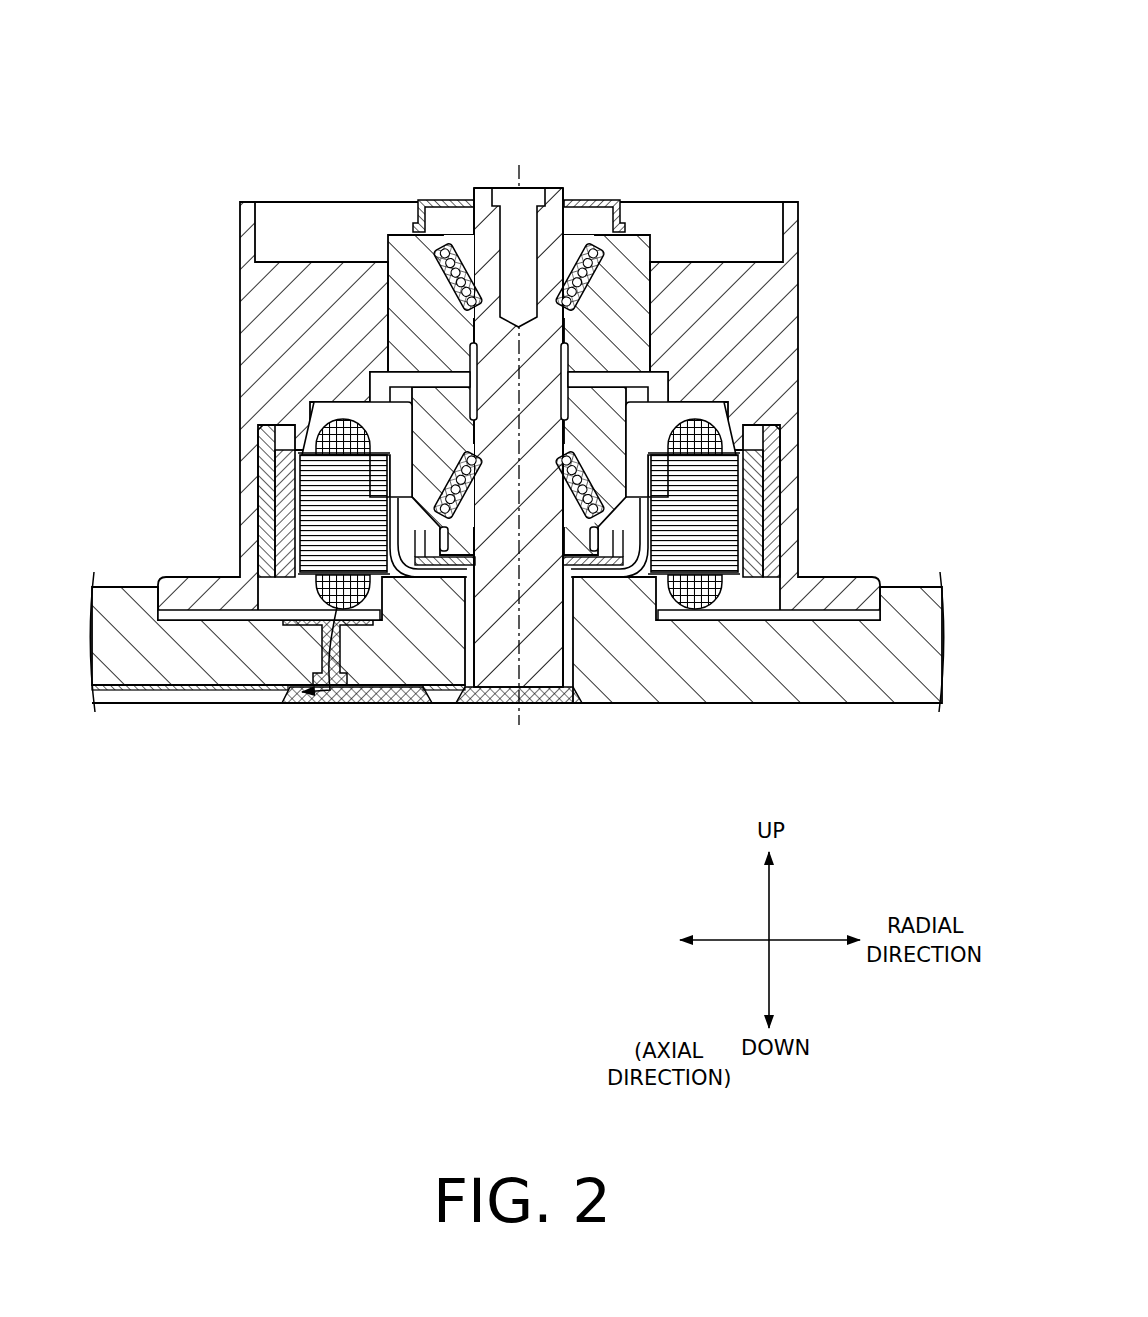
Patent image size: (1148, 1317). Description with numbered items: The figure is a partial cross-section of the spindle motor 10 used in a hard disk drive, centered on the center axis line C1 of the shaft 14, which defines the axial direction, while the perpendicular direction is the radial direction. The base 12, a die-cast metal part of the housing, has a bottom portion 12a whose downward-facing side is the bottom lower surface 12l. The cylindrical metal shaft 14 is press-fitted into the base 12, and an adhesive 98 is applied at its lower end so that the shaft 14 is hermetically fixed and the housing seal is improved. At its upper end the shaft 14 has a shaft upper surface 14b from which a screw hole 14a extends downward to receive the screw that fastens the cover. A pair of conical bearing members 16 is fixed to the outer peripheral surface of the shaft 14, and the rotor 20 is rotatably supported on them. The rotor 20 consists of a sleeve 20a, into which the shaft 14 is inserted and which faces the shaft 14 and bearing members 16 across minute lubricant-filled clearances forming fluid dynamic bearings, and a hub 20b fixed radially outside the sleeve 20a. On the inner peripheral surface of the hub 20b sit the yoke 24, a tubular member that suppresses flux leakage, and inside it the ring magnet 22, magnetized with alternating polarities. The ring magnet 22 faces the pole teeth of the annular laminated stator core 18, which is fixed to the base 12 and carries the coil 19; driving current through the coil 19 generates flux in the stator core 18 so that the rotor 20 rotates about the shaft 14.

The spindle motor 10 is at (773, 95).
The base 12 is at (499, 683).
The bottom portion 12a is at (218, 704).
The bottom lower surface 12l is at (825, 705).
The shaft 14 is at (572, 385).
The screw hole 14a is at (541, 186).
The shaft upper surface 14b is at (480, 205).
The bearing members 16 is at (410, 760).
The stator core 18 is at (725, 580).
The coil 19 is at (694, 590).
The rotor 20 is at (566, 407).
The sleeve 20a is at (625, 295).
The hub 20b is at (778, 340).
The ring magnet 22 is at (752, 463).
The yoke 24 is at (768, 504).
The adhesive 98 is at (548, 705).
The center axis line C1 is at (519, 165).